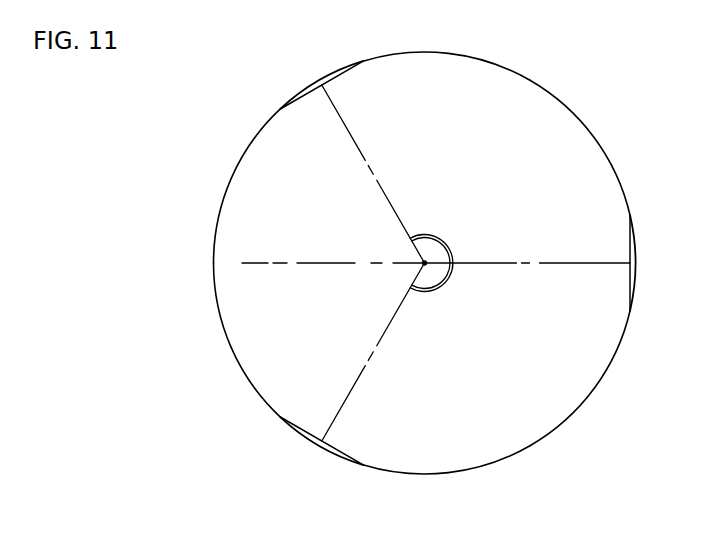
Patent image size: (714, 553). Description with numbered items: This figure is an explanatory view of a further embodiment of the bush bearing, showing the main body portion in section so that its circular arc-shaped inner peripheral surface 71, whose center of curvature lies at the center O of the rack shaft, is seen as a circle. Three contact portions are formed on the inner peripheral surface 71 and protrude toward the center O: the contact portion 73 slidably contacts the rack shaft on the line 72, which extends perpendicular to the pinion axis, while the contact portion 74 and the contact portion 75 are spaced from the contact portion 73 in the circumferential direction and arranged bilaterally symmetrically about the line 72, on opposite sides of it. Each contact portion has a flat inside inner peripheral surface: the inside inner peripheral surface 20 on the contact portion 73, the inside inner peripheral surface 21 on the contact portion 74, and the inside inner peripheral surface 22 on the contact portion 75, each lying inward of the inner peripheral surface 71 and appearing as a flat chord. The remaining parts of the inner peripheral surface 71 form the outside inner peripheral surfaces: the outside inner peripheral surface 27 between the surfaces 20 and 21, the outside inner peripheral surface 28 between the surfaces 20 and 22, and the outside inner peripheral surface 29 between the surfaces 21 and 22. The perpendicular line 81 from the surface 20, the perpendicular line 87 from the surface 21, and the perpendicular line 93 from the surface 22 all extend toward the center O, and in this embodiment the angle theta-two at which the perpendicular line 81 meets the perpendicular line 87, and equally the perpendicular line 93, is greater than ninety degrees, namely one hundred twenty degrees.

The inside inner peripheral surface 20 is at (632, 278).
The inside inner peripheral surface 21 is at (337, 78).
The inside inner peripheral surface 22 is at (302, 430).
The outside inner peripheral surface 27 is at (608, 165).
The outside inner peripheral surface 28 is at (603, 360).
The outside inner peripheral surface 29 is at (217, 232).
The inner peripheral surface 71 is at (230, 338).
The line 72 is at (343, 262).
The contact portion 73 is at (633, 252).
The contact portion 74 is at (306, 86).
The contact portion 75 is at (328, 452).
The perpendicular line 81 is at (565, 262).
The perpendicular line 87 is at (353, 139).
The perpendicular line 93 is at (365, 370).
The center O is at (422, 266).